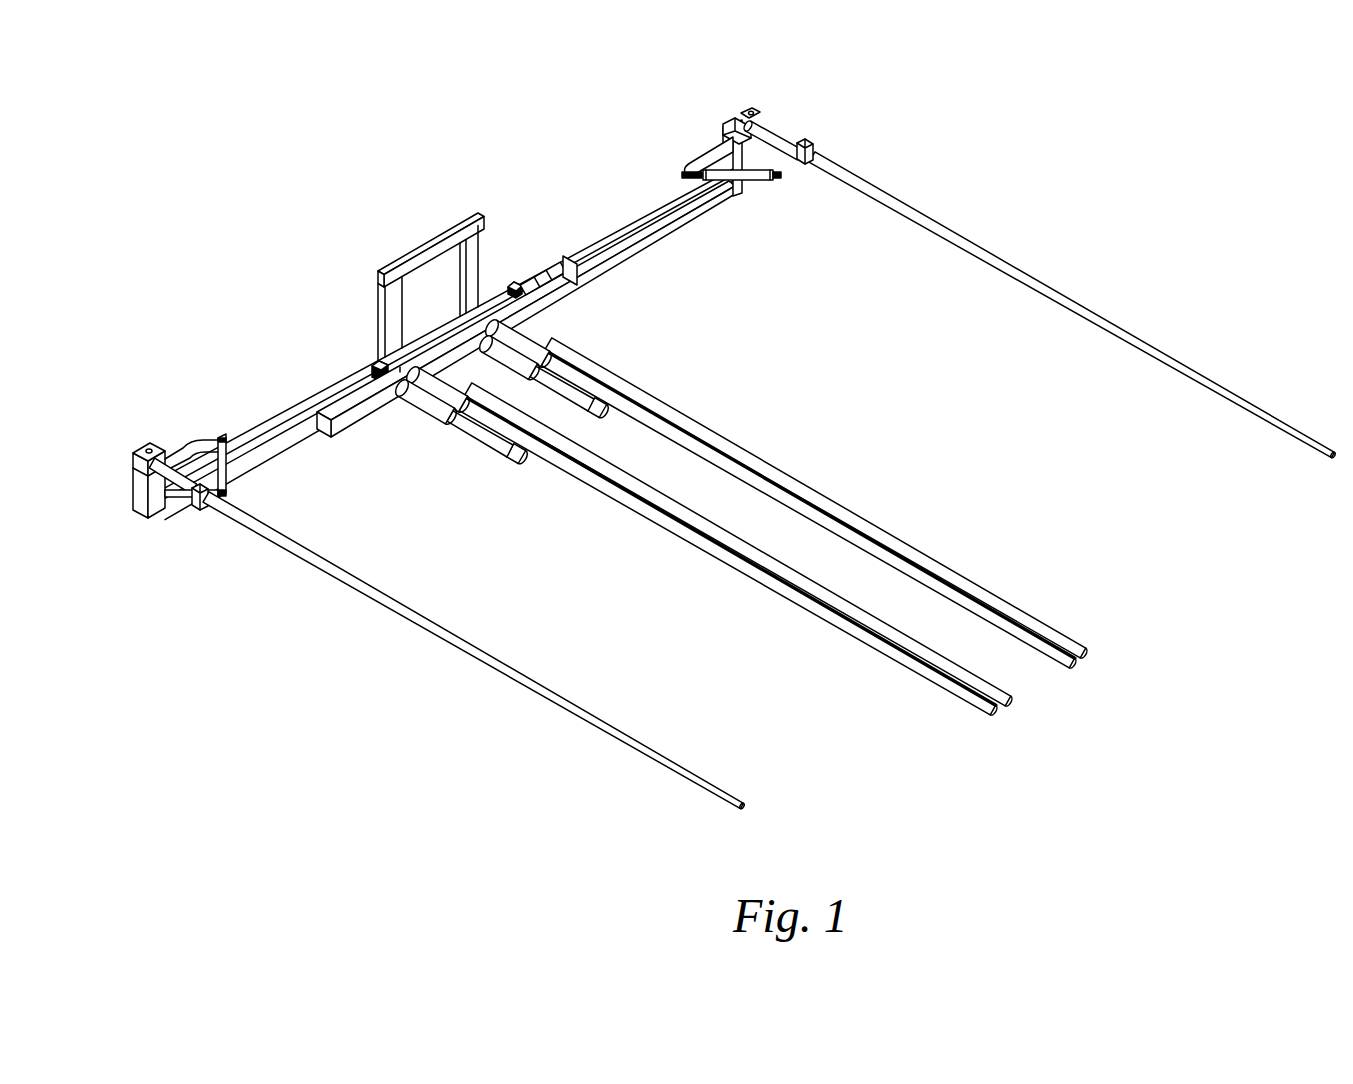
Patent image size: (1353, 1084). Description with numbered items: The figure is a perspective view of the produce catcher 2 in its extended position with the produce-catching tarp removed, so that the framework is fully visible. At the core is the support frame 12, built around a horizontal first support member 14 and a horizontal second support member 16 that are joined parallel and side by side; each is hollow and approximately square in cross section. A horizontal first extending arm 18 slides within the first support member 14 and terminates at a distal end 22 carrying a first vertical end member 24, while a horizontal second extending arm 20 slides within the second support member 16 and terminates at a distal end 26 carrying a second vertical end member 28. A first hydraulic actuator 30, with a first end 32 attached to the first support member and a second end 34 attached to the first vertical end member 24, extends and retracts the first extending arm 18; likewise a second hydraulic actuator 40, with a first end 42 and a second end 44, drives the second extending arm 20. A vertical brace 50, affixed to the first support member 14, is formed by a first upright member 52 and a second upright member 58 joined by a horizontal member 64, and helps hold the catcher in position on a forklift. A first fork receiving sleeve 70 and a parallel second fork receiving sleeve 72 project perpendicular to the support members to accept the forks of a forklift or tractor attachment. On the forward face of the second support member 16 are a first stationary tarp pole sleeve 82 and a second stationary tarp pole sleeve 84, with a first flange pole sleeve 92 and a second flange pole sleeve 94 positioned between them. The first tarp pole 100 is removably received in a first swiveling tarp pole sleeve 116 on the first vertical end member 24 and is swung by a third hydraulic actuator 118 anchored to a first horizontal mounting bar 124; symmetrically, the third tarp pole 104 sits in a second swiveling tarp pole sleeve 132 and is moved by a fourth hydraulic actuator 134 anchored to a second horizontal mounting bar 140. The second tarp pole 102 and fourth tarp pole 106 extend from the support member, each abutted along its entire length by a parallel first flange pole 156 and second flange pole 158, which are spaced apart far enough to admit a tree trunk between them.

The produce catcher 2 is at (338, 125).
The support frame 12 is at (258, 300).
The first support member 14 is at (537, 278).
The second support member 16 is at (347, 418).
The first extending arm 18 is at (265, 452).
The second extending arm 20 is at (637, 247).
The distal end 22 is at (185, 507).
The first vertical end member 24 is at (148, 497).
The distal end 26 is at (740, 196).
The second vertical end member 28 is at (728, 130).
The first hydraulic actuator 30 is at (365, 369).
The first end 32 is at (510, 287).
The second end 34 is at (192, 438).
The second hydraulic actuator 40 is at (530, 290).
The first end 42 is at (400, 367).
The second end 44 is at (690, 184).
The vertical brace 50 is at (419, 264).
The first upright member 52 is at (382, 320).
The second upright member 58 is at (477, 243).
The horizontal member 64 is at (455, 238).
The first fork receiving sleeve 70 is at (468, 427).
The second fork receiving sleeve 72 is at (563, 400).
The first stationary tarp pole sleeve 82 is at (432, 393).
The second stationary tarp pole sleeve 84 is at (540, 332).
The first flange pole sleeve 92 is at (445, 380).
The second flange pole sleeve 94 is at (518, 350).
The first tarp pole 100 is at (380, 597).
The second tarp pole 102 is at (593, 487).
The third tarp pole 104 is at (1013, 272).
The fourth tarp pole 106 is at (757, 467).
The first swiveling tarp pole sleeve 116 is at (148, 518).
The third hydraulic actuator 118 is at (223, 465).
The first horizontal mounting bar 124 is at (207, 442).
The second swiveling tarp pole sleeve 132 is at (770, 127).
The fourth hydraulic actuator 134 is at (760, 178).
The second horizontal mounting bar 140 is at (707, 157).
The first flange pole 156 is at (717, 533).
The second flange pole 158 is at (690, 445).